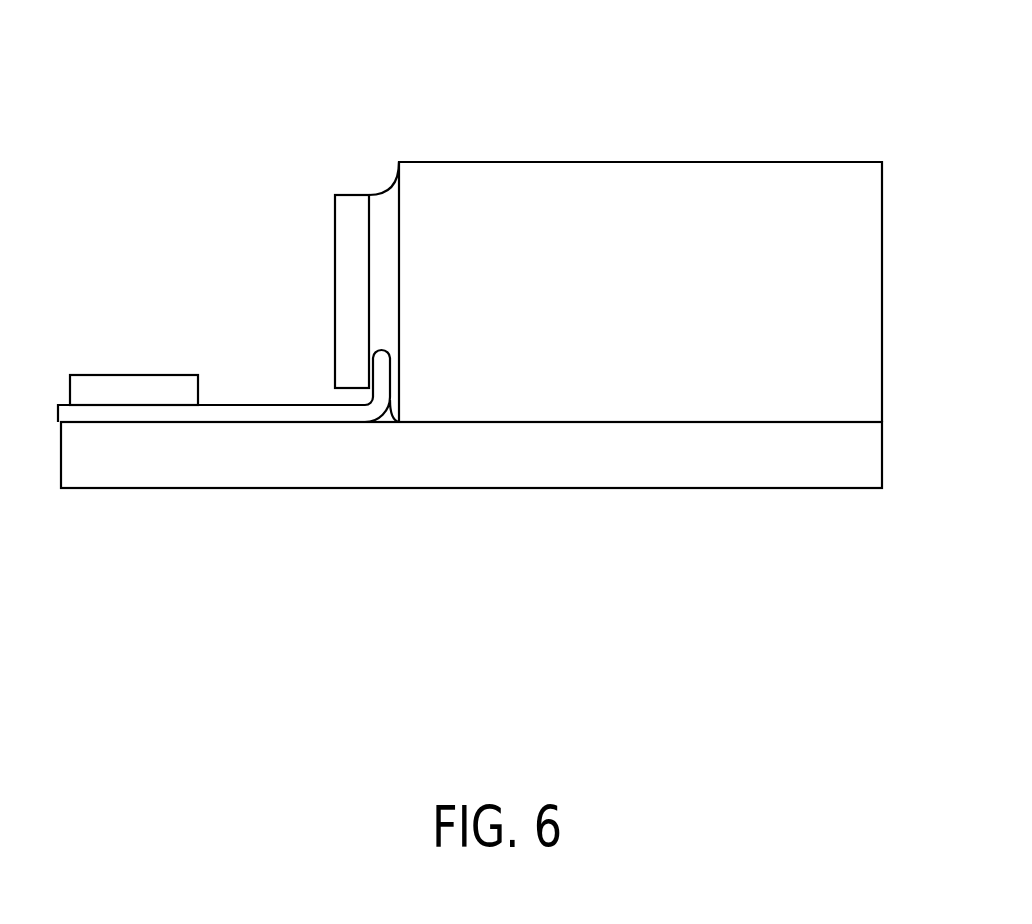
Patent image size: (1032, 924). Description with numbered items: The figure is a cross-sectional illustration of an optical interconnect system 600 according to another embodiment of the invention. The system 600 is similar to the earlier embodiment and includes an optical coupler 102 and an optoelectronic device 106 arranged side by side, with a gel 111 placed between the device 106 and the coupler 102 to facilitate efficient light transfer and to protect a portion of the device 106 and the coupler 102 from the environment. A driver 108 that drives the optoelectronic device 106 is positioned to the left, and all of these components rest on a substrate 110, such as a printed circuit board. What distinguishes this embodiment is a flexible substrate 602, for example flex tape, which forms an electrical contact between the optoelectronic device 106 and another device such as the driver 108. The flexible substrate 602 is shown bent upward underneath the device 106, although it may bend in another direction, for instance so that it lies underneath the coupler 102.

The system 600 is at (186, 162).
The optical coupler 102 is at (560, 187).
The optoelectronic device 106 is at (350, 207).
The driver 108 is at (148, 385).
The substrate 110 is at (603, 457).
The gel 111 is at (387, 205).
The flexible substrate 602 is at (275, 415).